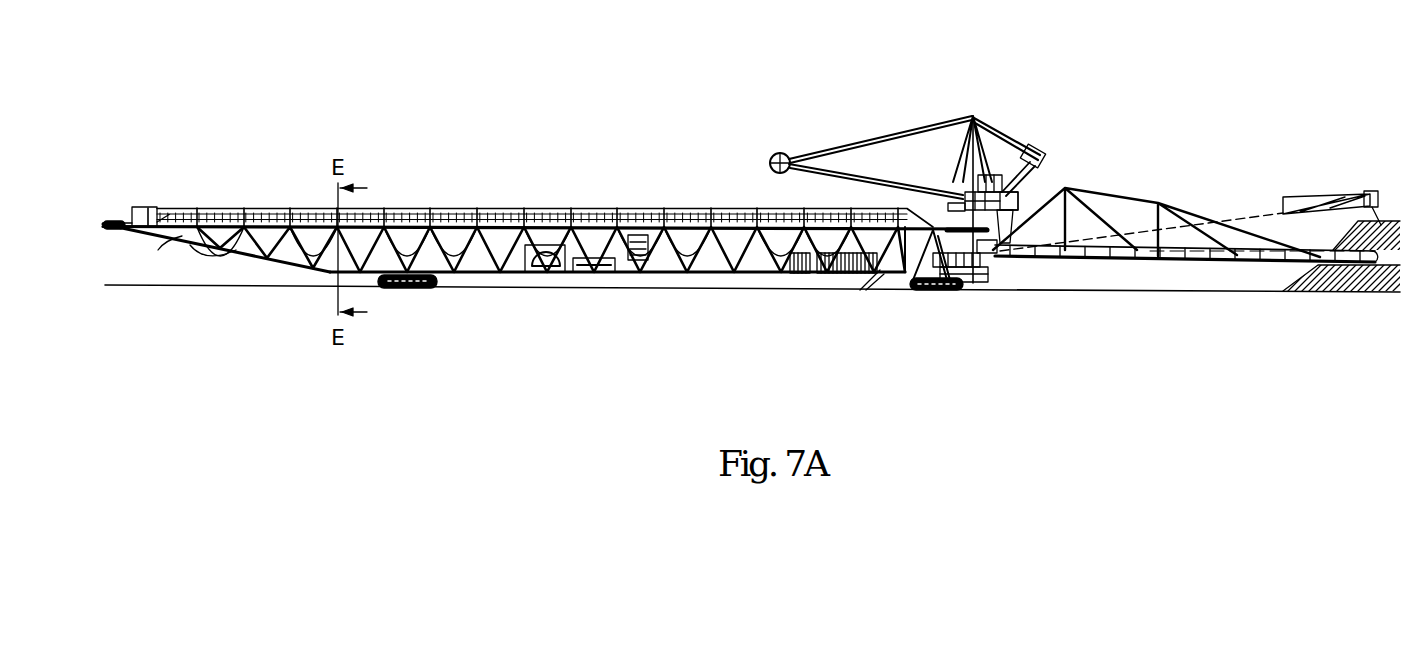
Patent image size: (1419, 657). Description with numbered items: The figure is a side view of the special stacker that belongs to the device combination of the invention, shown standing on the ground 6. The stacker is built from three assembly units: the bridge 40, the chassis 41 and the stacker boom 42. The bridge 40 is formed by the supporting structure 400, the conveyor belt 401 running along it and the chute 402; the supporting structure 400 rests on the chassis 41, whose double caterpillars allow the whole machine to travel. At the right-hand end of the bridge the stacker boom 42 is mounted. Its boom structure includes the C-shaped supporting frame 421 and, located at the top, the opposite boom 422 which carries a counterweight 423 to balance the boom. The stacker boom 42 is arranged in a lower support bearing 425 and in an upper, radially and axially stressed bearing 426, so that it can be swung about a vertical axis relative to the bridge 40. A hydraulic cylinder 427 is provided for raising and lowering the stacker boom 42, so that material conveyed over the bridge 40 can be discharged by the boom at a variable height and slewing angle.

The quay / ground 6 is at (158, 291).
The bridge 40 is at (660, 276).
The chassis 41 is at (406, 290).
The stacker boom 42 is at (1220, 263).
The supporting structure 400 is at (492, 276).
The conveyor belt 401 is at (600, 208).
The chute 402 is at (470, 206).
The C-shaped supporting frame 421 is at (1062, 186).
The opposite boom 422 is at (972, 114).
The counterweight 423 is at (780, 152).
The lower support bearing 425 is at (985, 283).
The upper, radially and axially stressed bearing 426 is at (963, 200).
The hydraulic cylinder 427 is at (1047, 160).